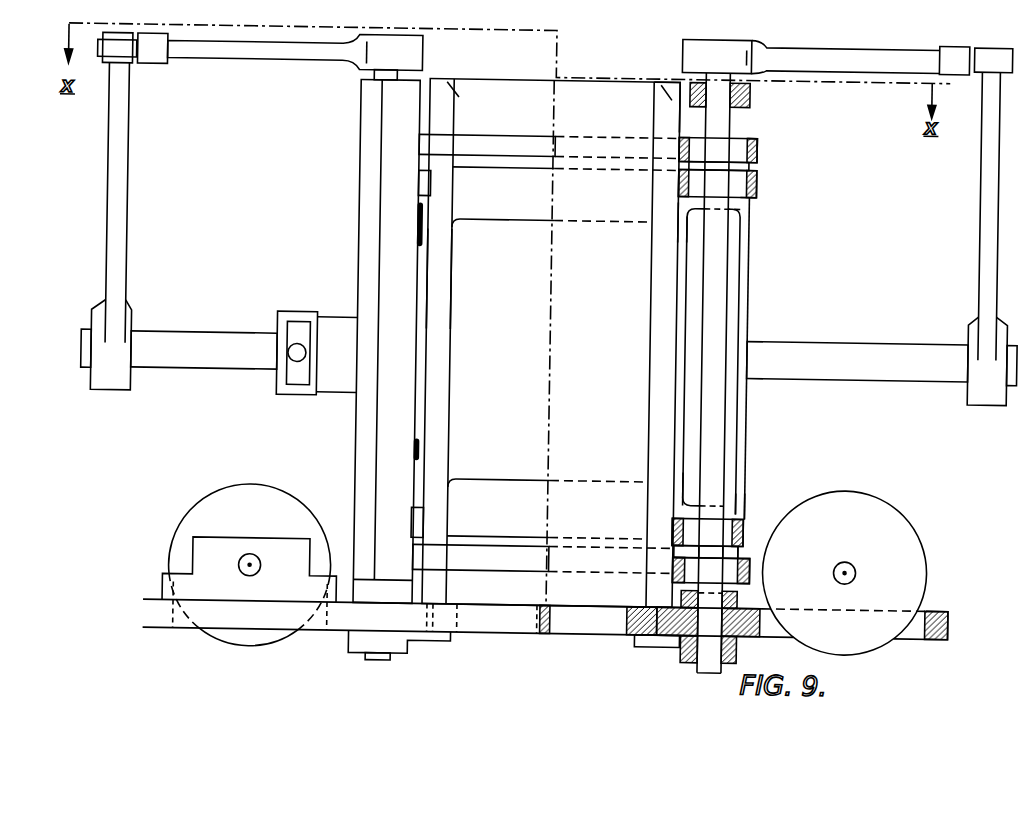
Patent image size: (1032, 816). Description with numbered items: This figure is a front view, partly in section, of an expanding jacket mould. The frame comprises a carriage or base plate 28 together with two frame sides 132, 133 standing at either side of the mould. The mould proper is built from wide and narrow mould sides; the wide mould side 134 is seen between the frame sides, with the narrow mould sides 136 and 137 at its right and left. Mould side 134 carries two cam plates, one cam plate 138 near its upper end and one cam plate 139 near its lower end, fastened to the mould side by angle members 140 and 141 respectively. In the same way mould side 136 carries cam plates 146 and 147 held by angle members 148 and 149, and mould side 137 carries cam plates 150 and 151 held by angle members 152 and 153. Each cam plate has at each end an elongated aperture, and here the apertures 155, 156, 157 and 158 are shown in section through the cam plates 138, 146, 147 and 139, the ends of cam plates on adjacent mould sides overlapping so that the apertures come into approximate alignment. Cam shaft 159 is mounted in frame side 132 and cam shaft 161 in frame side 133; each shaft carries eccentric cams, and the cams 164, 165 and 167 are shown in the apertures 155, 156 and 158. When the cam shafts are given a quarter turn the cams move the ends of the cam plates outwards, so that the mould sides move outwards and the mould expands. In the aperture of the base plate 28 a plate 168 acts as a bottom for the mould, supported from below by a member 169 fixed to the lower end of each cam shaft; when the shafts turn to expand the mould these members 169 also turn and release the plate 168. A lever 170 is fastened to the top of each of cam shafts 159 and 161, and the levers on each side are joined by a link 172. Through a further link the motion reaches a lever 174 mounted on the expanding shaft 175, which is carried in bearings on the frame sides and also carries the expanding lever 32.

The base plate 28 is at (154, 619).
The expanding lever 32 is at (297, 361).
The frame side 132 is at (380, 222).
The frame side 133 is at (750, 86).
The wide mould side 134 is at (521, 92).
The narrow mould side 136 is at (666, 90).
The narrow mould side 137 is at (437, 278).
The cam plate 138 is at (491, 144).
The cam plate 139 is at (477, 561).
The angle member 140 is at (515, 210).
The angle member 141 is at (500, 504).
The cam plate 146 is at (748, 168).
The cam plate 147 is at (745, 508).
The angle member 148 is at (675, 215).
The angle member 149 is at (675, 480).
The cam plate 150 is at (421, 183).
The cam plate 151 is at (421, 522).
The angle member 152 is at (421, 214).
The angle member 153 is at (419, 467).
The aperture 155 is at (740, 140).
The aperture 156 is at (752, 184).
The aperture 157 is at (737, 504).
The aperture 158 is at (750, 544).
The cam shaft 159 is at (385, 668).
The cam shaft 161 is at (717, 276).
The cam 164 is at (728, 147).
The cam 165 is at (723, 181).
The cam 167 is at (701, 566).
The plate 168 is at (553, 623).
The member 169 is at (397, 645).
The lever 170 is at (240, 56).
The link 172 is at (150, 66).
The lever 174 is at (115, 170).
The expanding shaft 175 is at (894, 347).